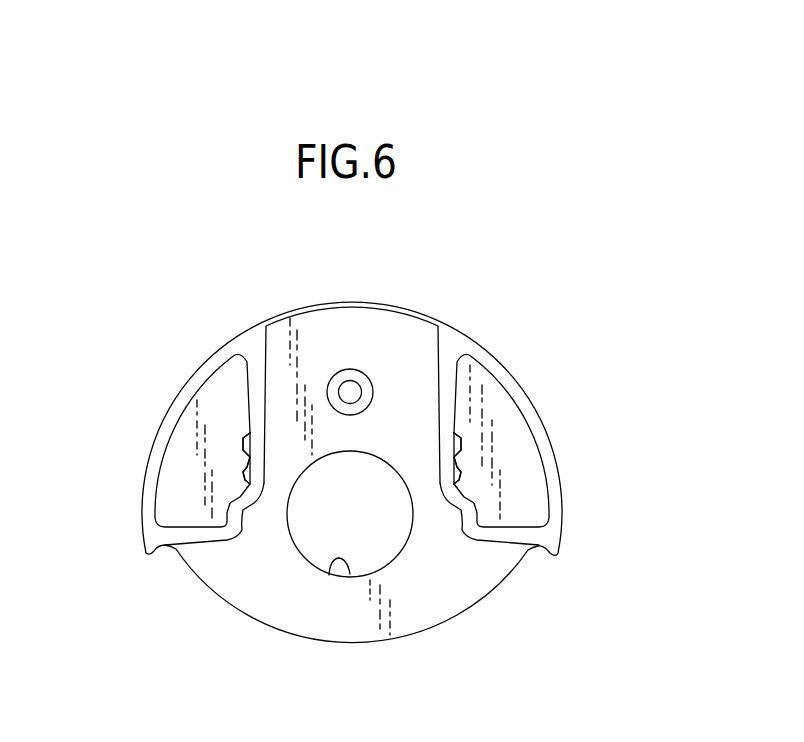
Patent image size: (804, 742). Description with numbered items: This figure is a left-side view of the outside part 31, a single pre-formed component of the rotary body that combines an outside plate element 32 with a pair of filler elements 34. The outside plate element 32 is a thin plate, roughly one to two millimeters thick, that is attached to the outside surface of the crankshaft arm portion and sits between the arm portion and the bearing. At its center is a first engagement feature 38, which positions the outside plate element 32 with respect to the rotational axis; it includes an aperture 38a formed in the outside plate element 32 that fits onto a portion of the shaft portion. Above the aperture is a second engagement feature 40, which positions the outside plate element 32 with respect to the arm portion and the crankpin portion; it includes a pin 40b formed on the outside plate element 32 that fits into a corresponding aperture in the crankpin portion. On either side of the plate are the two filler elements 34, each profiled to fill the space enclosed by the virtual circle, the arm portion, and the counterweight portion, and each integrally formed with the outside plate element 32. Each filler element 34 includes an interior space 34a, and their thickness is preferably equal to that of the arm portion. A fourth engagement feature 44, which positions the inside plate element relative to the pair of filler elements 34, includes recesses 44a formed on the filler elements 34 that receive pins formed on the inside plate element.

The outside part 31 is at (479, 313).
The outside plate element 32 is at (266, 622).
The filler element 34 is at (175, 399).
The interior space 34a is at (182, 487).
The fourth engagement feature 44 is at (379, 447).
The recess 44a is at (247, 453).
The second engagement feature 40 is at (372, 330).
The pin 40b is at (350, 368).
The first engagement feature 38 is at (361, 514).
The aperture 38a is at (350, 575).